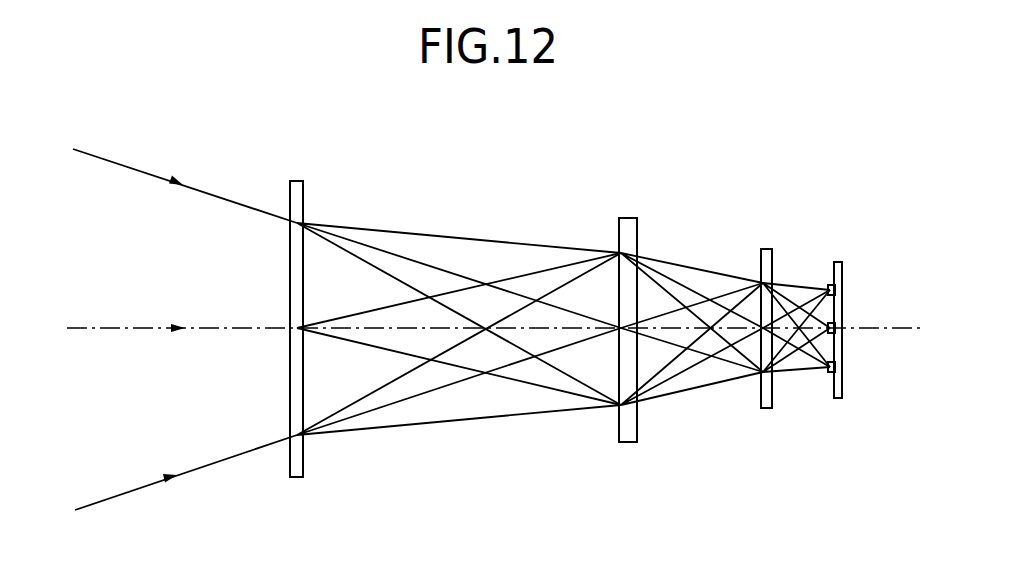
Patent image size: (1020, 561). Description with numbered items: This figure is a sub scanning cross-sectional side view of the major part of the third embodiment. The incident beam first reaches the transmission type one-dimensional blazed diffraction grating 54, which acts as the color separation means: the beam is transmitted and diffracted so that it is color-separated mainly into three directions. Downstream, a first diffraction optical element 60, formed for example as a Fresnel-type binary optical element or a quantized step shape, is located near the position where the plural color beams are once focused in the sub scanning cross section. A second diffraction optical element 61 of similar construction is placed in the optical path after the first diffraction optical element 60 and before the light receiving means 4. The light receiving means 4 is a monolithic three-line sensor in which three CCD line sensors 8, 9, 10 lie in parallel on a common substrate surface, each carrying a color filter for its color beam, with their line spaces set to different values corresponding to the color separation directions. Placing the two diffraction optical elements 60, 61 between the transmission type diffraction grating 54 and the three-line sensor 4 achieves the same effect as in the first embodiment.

The transmission type one-dimensional blazed diffraction grating 54 is at (296, 181).
The first diffraction optical element 60 is at (623, 218).
The second diffraction optical element 61 is at (765, 249).
The light receiving means 4 is at (838, 262).
The line sensor 10 is at (843, 289).
The line sensor 9 is at (843, 327).
The line sensor 8 is at (843, 368).